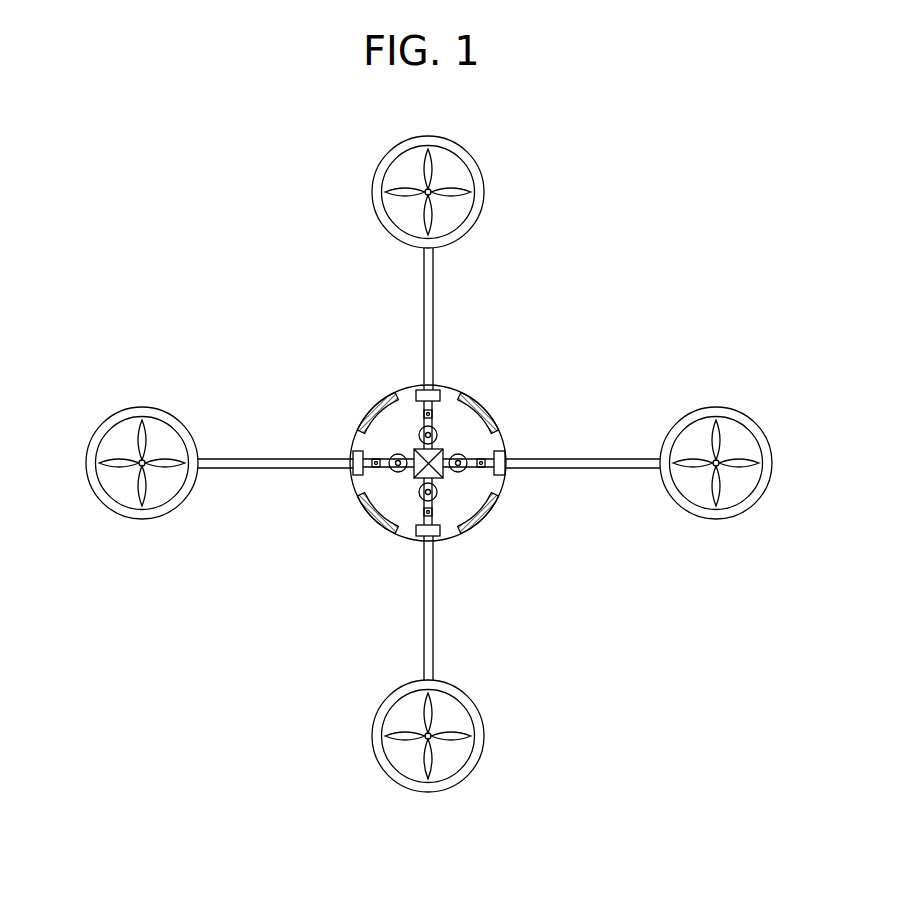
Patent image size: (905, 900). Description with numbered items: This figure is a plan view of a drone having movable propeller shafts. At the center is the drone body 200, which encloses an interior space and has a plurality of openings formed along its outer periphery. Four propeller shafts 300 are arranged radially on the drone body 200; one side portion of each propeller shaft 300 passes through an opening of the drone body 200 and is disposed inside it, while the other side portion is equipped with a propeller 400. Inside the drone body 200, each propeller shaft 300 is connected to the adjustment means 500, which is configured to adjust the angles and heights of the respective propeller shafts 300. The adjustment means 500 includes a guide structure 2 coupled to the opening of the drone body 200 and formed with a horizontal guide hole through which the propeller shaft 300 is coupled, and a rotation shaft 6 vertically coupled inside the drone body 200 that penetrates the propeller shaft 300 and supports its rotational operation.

The guide structure 2 is at (508, 446).
The rotation shaft 6 is at (480, 458).
The drone body 200 is at (488, 412).
The propeller shaft 300 is at (265, 462).
The propeller 400 is at (137, 431).
The adjustment means 500 is at (464, 476).